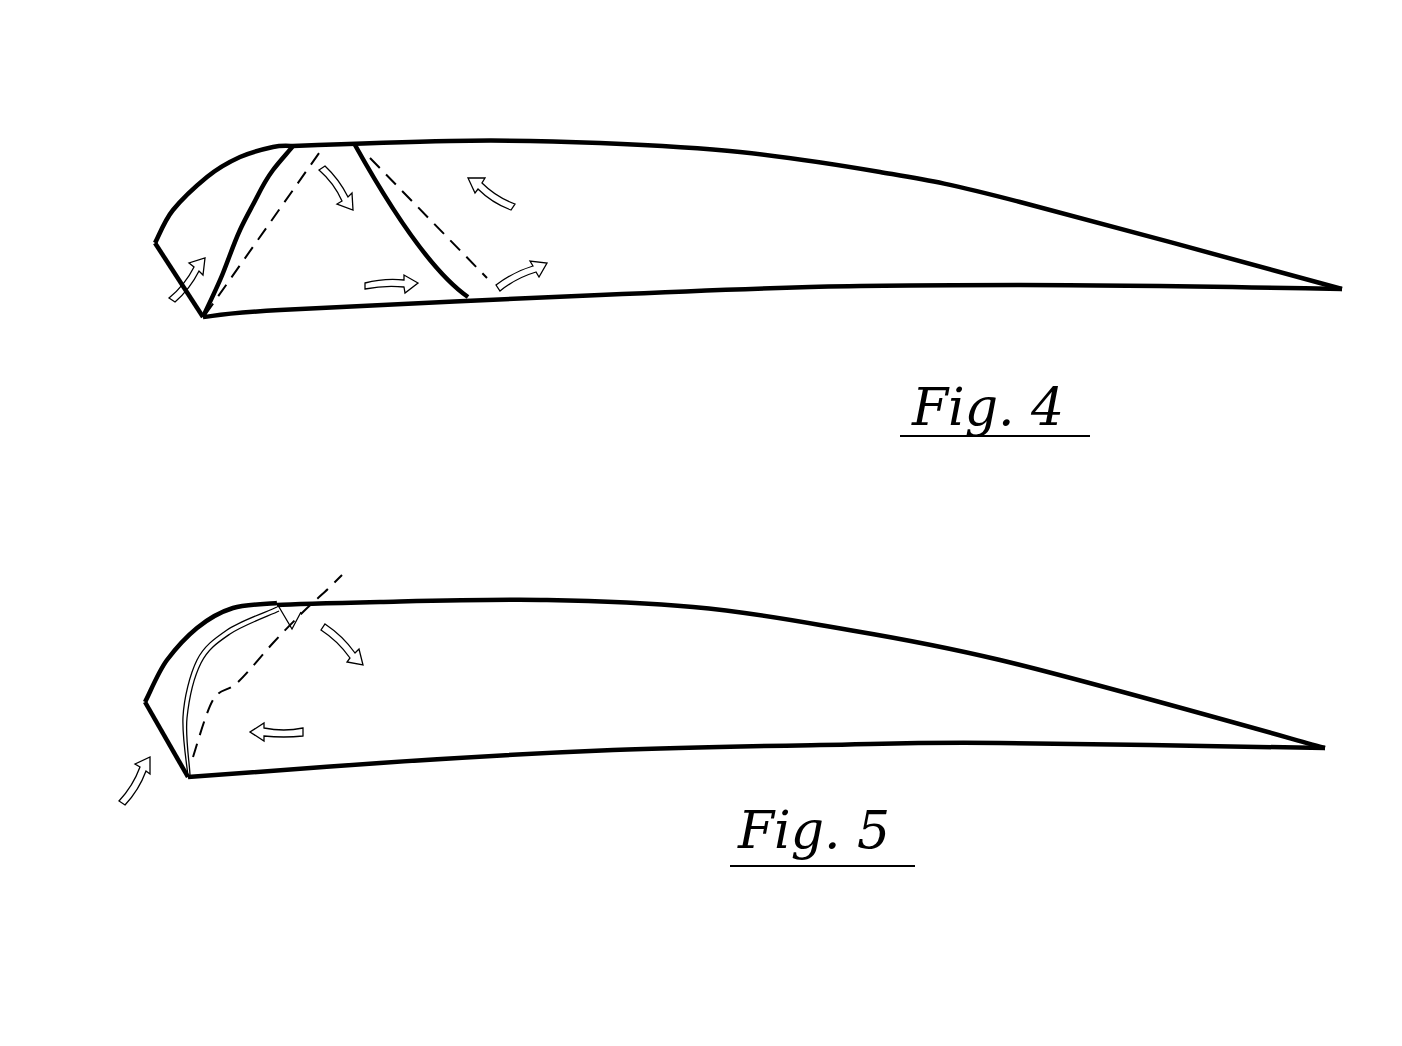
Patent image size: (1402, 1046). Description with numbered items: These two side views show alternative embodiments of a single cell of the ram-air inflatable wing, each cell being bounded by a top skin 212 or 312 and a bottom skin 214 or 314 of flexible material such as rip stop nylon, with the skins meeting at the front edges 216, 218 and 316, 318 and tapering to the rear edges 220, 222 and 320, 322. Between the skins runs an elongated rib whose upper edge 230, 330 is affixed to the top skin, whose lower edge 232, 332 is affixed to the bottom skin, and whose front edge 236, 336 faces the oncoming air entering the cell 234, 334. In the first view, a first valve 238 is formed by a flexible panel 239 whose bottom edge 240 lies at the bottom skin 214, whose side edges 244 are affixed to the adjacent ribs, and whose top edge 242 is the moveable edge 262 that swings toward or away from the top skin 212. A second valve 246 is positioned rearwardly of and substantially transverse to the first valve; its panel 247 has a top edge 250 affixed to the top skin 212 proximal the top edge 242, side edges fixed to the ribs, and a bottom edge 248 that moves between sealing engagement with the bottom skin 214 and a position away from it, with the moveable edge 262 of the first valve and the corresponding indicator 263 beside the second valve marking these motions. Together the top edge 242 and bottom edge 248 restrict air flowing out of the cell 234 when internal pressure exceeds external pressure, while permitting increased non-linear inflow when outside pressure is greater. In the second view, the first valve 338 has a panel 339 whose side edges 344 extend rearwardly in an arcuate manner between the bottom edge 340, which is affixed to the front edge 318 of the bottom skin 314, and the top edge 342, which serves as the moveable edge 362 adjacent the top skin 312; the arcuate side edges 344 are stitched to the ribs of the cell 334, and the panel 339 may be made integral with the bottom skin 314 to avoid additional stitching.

In FIG. 4, the top skin 212 is at (745, 152).
In FIG. 4, the bottom skin 214 is at (750, 288).
In FIG. 4, the front edge of top skin 216 is at (160, 252).
In FIG. 4, the front edge of bottom skin 218 is at (203, 320).
In FIG. 4, the rear edge of top skin 220 is at (1307, 280).
In FIG. 4, the rear edge of bottom skin 222 is at (1305, 292).
In FIG. 4, the upper edge of rib 230 is at (507, 147).
In FIG. 4, the lower edge of rib 232 is at (383, 302).
In FIG. 4, the cell 234 is at (162, 288).
In FIG. 4, the front edge of rib 236 is at (163, 258).
In FIG. 4, the first valve 238 is at (237, 218).
In FIG. 4, the first valve panel 239 is at (220, 263).
In FIG. 4, the bottom edge of first valve panel 240 is at (197, 312).
In FIG. 4, the top edge of first valve panel 242 is at (293, 150).
In FIG. 4, the side edges of first valve panel 244 is at (265, 193).
In FIG. 4, the second valve 246 is at (417, 245).
In FIG. 4, the second valve panel 247 is at (432, 267).
In FIG. 4, the bottom edge of second valve panel 248 is at (450, 300).
In FIG. 4, the top edge of second valve panel 250 is at (322, 150).
In FIG. 4, the moveable edge 262 is at (262, 242).
In FIG. 4, the second deflection position 263 is at (447, 233).
In FIG. 5, the top skin 312 is at (697, 607).
In FIG. 5, the bottom skin 314 is at (452, 760).
In FIG. 5, the front edge of top skin 316 is at (158, 715).
In FIG. 5, the front edge of bottom skin 318 is at (193, 780).
In FIG. 5, the rear edge of top skin 320 is at (1288, 737).
In FIG. 5, the rear edge of bottom skin 322 is at (1287, 752).
In FIG. 5, the upper edge of rib 330 is at (455, 603).
In FIG. 5, the lower edge of rib 332 is at (400, 760).
In FIG. 5, the cell 334 is at (150, 742).
In FIG. 5, the front edge of rib 336 is at (155, 718).
In FIG. 5, the first valve 338 is at (217, 637).
In FIG. 5, the panel 339 is at (193, 673).
In FIG. 5, the bottom edge of panel 340 is at (183, 783).
In FIG. 5, the top edge of panel 342 is at (302, 656).
In FIG. 5, the arcuate side edges 344 is at (183, 693).
In FIG. 5, the moveable edge 362 is at (247, 669).